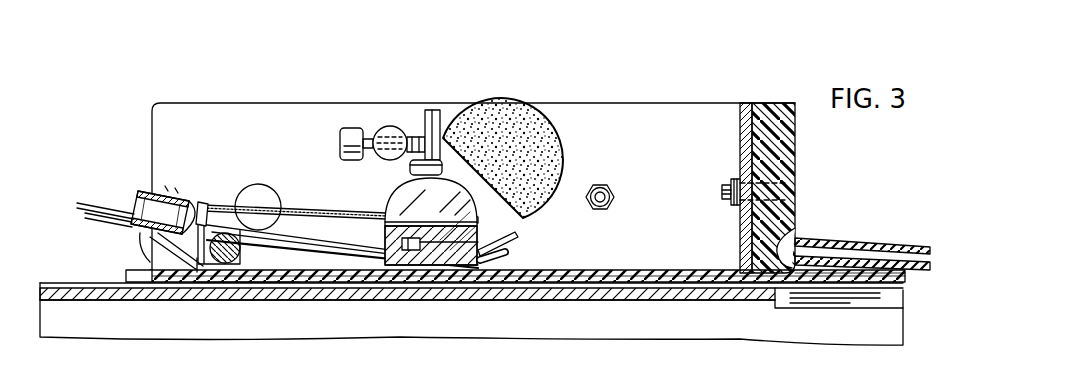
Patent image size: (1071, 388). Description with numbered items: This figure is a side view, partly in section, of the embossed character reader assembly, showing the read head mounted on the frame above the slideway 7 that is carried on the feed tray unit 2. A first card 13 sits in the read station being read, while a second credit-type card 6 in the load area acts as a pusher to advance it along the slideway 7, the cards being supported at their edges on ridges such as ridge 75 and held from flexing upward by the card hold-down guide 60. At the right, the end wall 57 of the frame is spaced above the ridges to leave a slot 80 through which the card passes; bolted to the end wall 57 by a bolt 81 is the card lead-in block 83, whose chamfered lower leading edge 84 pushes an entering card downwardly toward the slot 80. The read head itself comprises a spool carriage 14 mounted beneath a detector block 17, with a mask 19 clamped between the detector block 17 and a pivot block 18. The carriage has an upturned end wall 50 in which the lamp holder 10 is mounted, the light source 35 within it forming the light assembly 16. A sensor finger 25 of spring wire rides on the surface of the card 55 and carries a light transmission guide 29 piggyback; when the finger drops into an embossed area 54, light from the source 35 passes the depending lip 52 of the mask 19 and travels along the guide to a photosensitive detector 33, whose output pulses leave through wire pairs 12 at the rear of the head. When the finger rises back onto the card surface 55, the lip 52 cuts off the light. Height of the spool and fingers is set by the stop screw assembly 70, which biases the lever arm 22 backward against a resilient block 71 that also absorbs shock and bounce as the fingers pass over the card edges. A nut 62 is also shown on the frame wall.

The feed tray unit 2 is at (139, 328).
The credit-type card 6 is at (866, 276).
The slideway 7 is at (630, 300).
The lamp holder 10 is at (180, 198).
The wire pairs 12 is at (517, 235).
The first card 13 is at (610, 272).
The spool carriage 14 is at (507, 255).
The light assembly 16 is at (136, 178).
The detector block 17 is at (402, 238).
The pivot block 18 is at (446, 206).
The mask 19 is at (297, 207).
The arm 22 is at (436, 110).
The sensor finger 25 is at (335, 253).
The light transmission guide 29 is at (362, 246).
The photosensitive detector 33 is at (458, 224).
The light source 35 is at (160, 212).
The upturned end wall 50 is at (168, 190).
The depending lip 52 is at (205, 203).
The embossed area 54 is at (272, 290).
The surface of the card 55 is at (138, 270).
The end wall 57 is at (740, 129).
The card hold-down guide 60 is at (635, 160).
The nut 62 is at (603, 211).
The stop screw assembly 70 is at (389, 96).
The resilient block 71 is at (504, 158).
The ridge 75 is at (652, 272).
The slot 80 is at (742, 272).
The bolt 81 is at (729, 182).
The card lead-in block 83 is at (769, 115).
The chamfered lower leading edge 84 is at (790, 240).